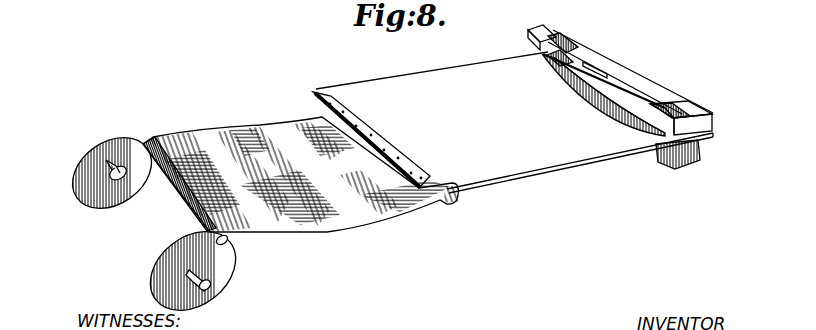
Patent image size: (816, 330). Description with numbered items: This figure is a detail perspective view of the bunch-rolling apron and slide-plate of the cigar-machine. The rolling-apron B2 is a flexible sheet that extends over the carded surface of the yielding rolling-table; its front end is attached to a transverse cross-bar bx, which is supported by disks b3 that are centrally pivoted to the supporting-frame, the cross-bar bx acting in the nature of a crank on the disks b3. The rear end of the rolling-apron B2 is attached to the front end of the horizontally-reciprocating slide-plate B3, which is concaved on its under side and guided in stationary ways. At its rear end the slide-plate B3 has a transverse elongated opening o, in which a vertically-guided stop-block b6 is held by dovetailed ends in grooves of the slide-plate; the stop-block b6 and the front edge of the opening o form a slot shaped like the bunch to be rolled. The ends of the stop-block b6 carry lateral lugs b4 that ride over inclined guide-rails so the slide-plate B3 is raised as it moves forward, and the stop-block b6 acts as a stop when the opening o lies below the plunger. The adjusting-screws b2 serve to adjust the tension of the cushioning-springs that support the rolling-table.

The rolling-apron B2 is at (318, 136).
The slide-plate B3 is at (514, 122).
The adjusting-screws b2 is at (228, 242).
The disks b3 is at (230, 292).
The cross-bar bx is at (193, 206).
The lateral lugs b4 is at (553, 32).
The stop-block b6 is at (612, 79).
The transverse elongated opening o is at (611, 99).